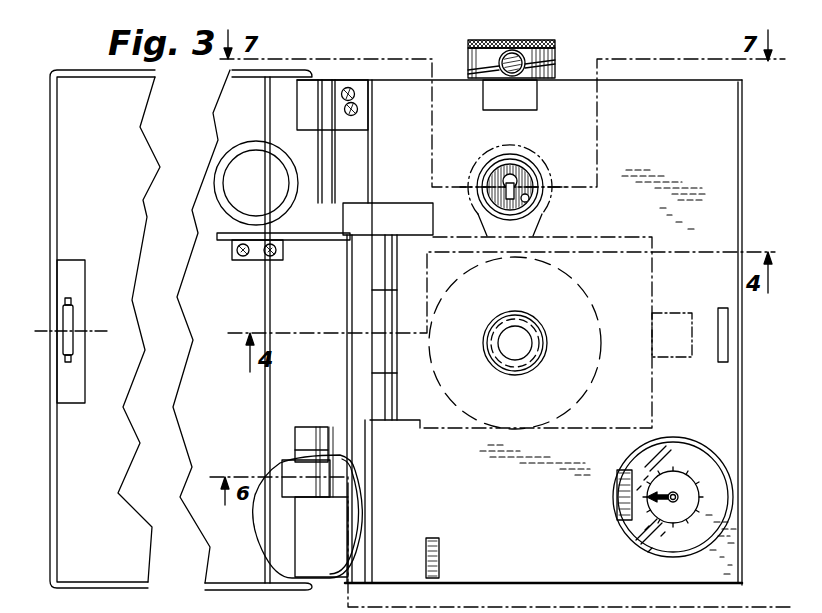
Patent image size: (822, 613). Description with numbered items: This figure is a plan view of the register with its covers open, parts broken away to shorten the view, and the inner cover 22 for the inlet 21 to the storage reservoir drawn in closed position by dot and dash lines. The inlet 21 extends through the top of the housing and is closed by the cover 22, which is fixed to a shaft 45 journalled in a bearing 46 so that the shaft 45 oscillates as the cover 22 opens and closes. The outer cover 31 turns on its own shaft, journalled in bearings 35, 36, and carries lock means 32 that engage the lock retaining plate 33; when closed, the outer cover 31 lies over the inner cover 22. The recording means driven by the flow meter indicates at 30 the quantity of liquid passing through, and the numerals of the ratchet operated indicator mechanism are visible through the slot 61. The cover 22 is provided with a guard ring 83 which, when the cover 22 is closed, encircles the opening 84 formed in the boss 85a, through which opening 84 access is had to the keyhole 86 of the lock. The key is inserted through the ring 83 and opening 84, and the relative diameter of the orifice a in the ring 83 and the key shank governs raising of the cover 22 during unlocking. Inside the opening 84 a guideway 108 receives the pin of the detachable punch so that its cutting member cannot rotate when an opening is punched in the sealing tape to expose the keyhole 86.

The inlet 21 is at (526, 338).
The cover 22 is at (655, 291).
The quantity indication 30 is at (608, 510).
The outer cover 31 is at (50, 490).
The lock means 32 is at (77, 382).
The lock retaining plate 33 is at (733, 344).
The bearing 35 is at (308, 103).
The bearing 36 is at (300, 446).
The shaft 45 is at (393, 428).
The bearing 46 is at (387, 312).
The slot 61 is at (440, 557).
The guard ring 83 is at (216, 198).
The opening 84 is at (523, 196).
The boss 85a is at (541, 186).
The keyhole 86 is at (549, 160).
The guideway 108 is at (513, 162).
The orifice a is at (240, 171).